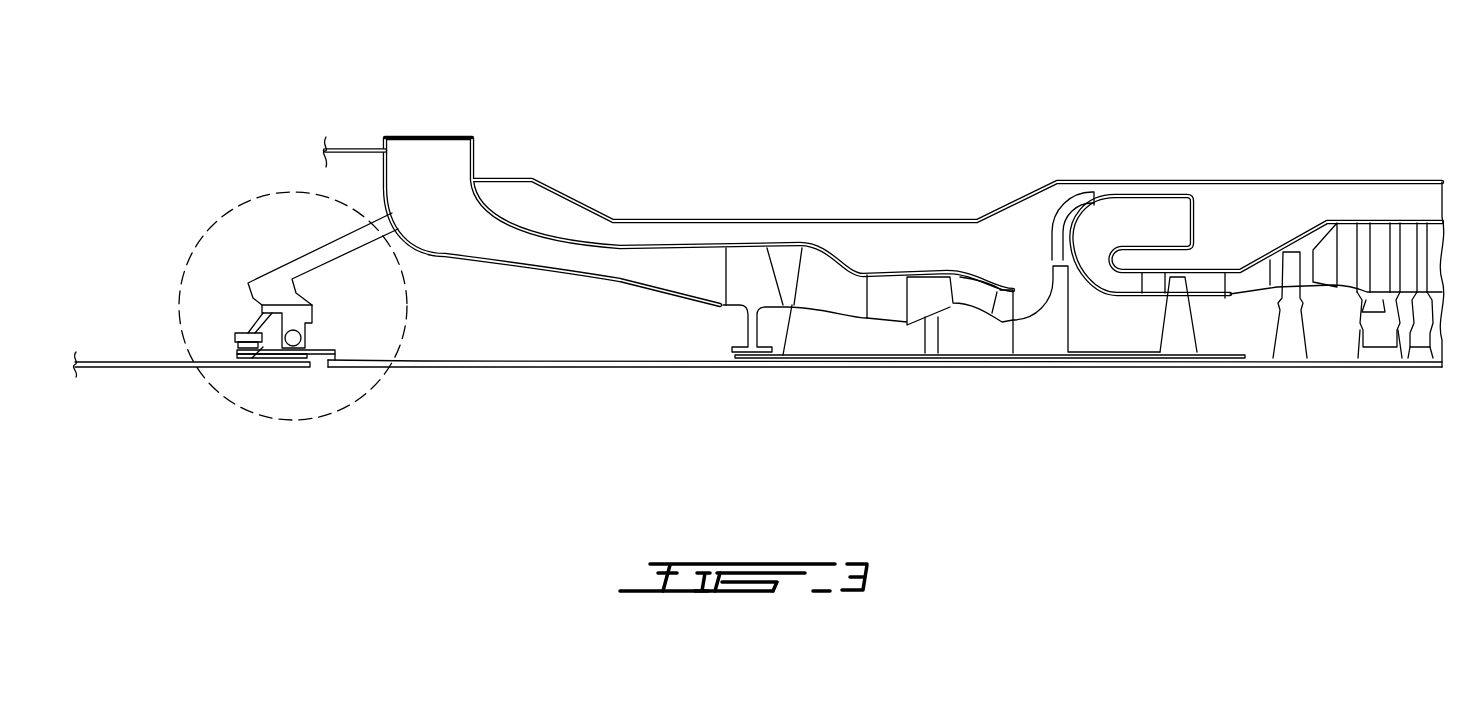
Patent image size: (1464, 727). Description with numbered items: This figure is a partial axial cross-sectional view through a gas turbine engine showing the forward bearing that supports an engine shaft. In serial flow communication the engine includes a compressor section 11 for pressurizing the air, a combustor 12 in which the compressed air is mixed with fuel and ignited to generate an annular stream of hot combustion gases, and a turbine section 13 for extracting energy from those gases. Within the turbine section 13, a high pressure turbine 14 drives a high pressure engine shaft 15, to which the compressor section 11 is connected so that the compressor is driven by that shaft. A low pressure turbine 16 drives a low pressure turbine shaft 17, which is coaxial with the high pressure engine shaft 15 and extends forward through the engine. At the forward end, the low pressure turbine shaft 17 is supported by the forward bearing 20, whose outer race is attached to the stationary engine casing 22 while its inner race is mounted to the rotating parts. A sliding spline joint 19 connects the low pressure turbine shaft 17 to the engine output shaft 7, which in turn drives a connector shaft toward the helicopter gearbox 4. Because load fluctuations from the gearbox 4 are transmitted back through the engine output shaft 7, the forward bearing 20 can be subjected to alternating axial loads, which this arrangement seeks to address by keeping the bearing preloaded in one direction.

The gearbox 4 is at (241, 205).
The engine output shaft 7 is at (92, 372).
The compressor section 11 is at (933, 235).
The combustor 12 is at (1148, 220).
The turbine section 13 is at (1313, 190).
The high pressure turbine 14 is at (1178, 328).
The high pressure engine shaft 15 is at (965, 327).
The low pressure turbine 16 is at (1408, 323).
The low pressure turbine shaft 17 is at (463, 372).
The sliding spline joint 19 is at (273, 370).
The forward bearing 20 is at (325, 405).
The engine casing 22 is at (386, 218).